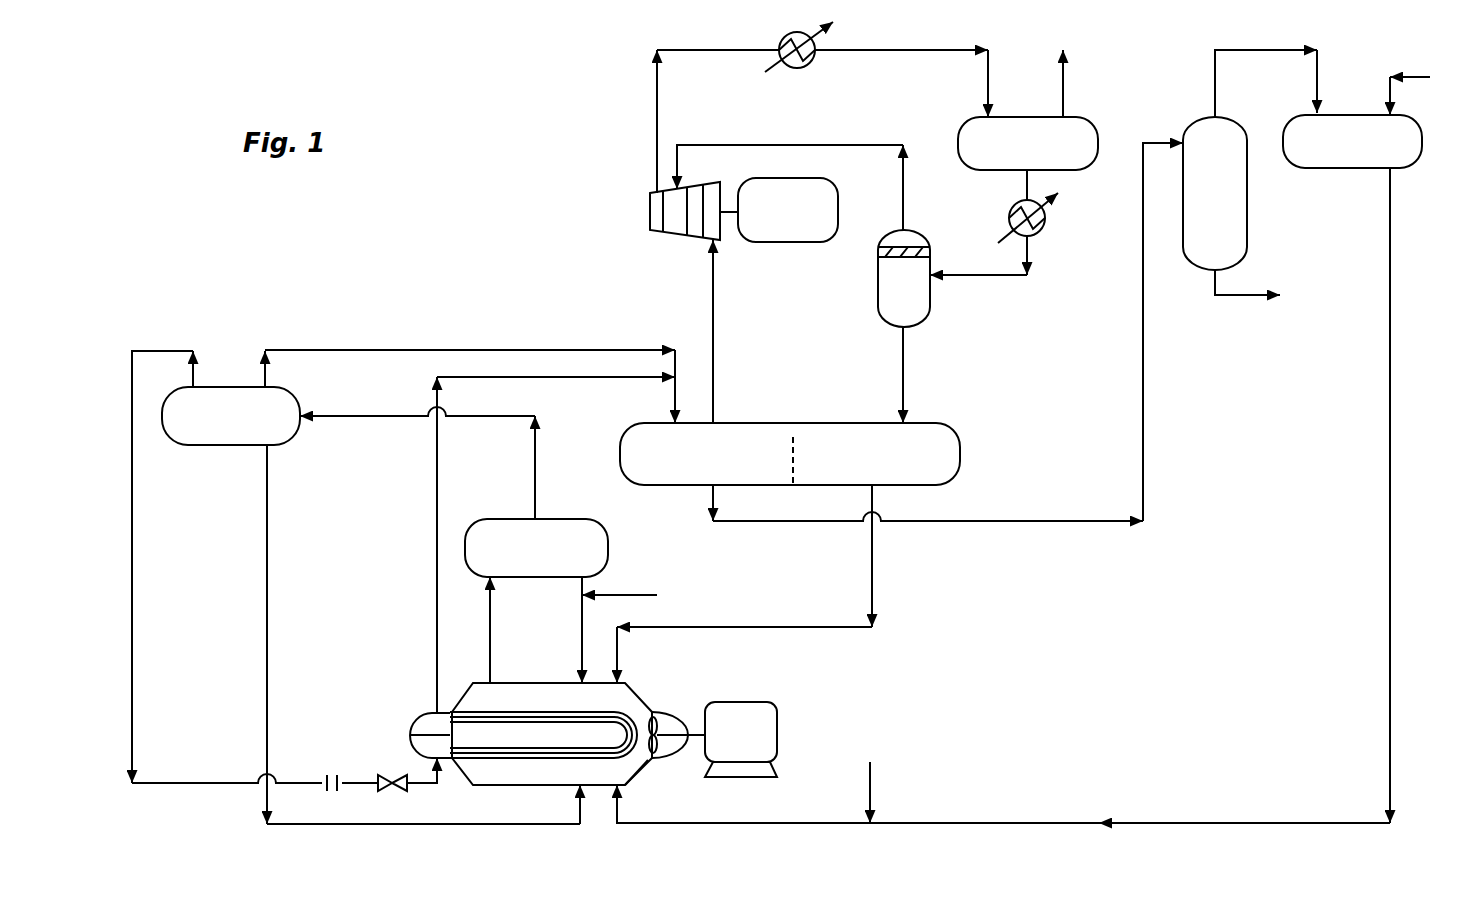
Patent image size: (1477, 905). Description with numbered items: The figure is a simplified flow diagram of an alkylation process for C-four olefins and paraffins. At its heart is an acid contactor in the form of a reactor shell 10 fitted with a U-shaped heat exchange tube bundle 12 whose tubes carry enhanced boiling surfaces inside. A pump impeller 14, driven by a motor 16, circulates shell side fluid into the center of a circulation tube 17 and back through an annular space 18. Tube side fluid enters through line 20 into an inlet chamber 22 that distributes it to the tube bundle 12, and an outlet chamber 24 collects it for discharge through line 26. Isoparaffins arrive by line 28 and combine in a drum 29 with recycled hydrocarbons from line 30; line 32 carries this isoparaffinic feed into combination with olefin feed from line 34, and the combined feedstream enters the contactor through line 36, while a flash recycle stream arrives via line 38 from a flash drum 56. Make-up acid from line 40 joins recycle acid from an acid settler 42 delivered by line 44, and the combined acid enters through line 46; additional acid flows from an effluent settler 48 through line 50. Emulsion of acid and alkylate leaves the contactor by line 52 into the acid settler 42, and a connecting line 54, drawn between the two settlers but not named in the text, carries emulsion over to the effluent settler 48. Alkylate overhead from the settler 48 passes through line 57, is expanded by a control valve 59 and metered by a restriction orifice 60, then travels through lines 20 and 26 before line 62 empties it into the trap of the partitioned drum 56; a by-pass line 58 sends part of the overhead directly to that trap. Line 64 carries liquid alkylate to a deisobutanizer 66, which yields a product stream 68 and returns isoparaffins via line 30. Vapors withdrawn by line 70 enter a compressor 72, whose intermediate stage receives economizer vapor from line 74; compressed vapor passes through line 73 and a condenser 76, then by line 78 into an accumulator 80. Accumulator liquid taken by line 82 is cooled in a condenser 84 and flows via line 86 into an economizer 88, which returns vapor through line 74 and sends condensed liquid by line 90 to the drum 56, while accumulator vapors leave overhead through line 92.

The reactor shell 10 is at (528, 683).
The heat exchange tube bundle 12 is at (628, 718).
The pump impeller 14 is at (672, 731).
The motor 16 is at (778, 737).
The circulation tube 17 is at (627, 755).
The annular space 18 is at (534, 773).
The line 20 is at (438, 780).
The inlet chamber 22 is at (412, 745).
The outlet chamber 24 is at (432, 728).
The line 26 is at (437, 572).
The line 28 is at (1412, 77).
The drum 29 is at (1422, 137).
The line 30 is at (1260, 50).
The line 32 is at (1390, 516).
The line 34 is at (870, 781).
The line 36 is at (646, 825).
The line 38 is at (827, 627).
The line 40 is at (648, 600).
The acid settler 42 is at (557, 519).
The line 44 is at (583, 586).
The line 46 is at (582, 648).
The effluent settler 48 is at (213, 447).
The line 50 is at (267, 573).
The line 52 is at (490, 608).
The line 54 is at (473, 418).
The flash drum 56 is at (960, 447).
The line 57 is at (132, 540).
The line 58 is at (497, 350).
The control valve 59 is at (403, 788).
The restriction orifice 60 is at (322, 780).
The line 62 is at (675, 397).
The line 64 is at (1078, 522).
The deisobutanizer 66 is at (1247, 192).
The product stream 68 is at (1220, 297).
The line 70 is at (713, 320).
The compressor 72 is at (727, 252).
The line 73 is at (657, 115).
The line 74 is at (772, 145).
The condenser 76 is at (784, 37).
The line 78 is at (883, 50).
The accumulator 80 is at (1098, 135).
The line 82 is at (1027, 183).
The condenser 84 is at (1045, 228).
The line 86 is at (1003, 276).
The economizer 88 is at (930, 305).
The line 90 is at (903, 358).
The line 92 is at (1063, 78).